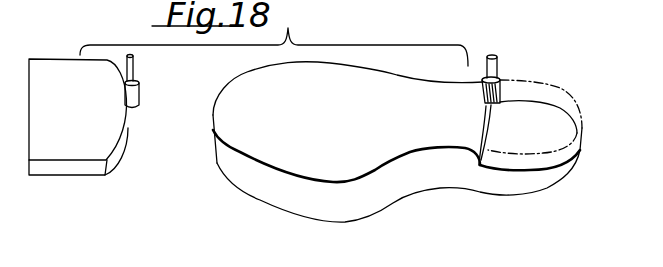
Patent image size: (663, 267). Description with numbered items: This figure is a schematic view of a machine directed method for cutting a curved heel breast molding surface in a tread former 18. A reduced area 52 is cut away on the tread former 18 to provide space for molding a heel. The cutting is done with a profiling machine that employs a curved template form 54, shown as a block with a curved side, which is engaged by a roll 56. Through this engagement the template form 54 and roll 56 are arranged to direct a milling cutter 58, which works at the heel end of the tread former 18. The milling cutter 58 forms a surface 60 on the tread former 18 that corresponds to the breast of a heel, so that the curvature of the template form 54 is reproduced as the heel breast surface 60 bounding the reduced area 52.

The tread former 18 is at (376, 190).
The reduced area 52 is at (542, 95).
The curved template form 54 is at (68, 163).
The roll 56 is at (135, 90).
The milling cutter 58 is at (493, 65).
The surface 60 is at (490, 140).